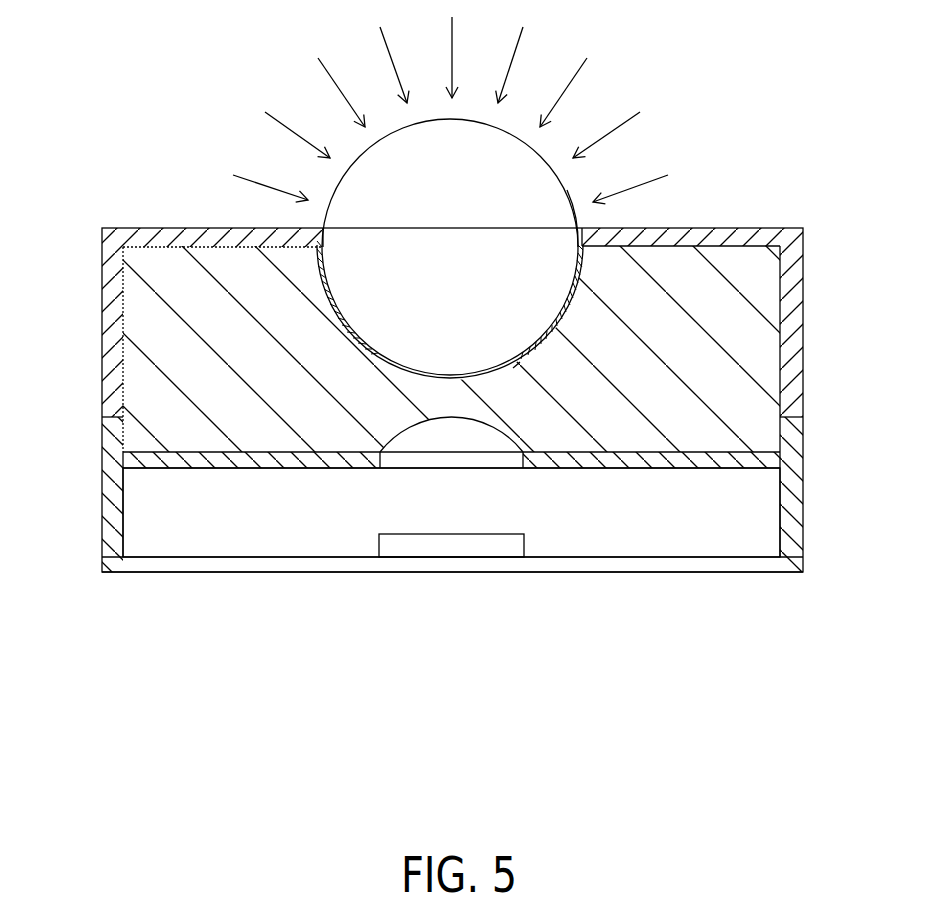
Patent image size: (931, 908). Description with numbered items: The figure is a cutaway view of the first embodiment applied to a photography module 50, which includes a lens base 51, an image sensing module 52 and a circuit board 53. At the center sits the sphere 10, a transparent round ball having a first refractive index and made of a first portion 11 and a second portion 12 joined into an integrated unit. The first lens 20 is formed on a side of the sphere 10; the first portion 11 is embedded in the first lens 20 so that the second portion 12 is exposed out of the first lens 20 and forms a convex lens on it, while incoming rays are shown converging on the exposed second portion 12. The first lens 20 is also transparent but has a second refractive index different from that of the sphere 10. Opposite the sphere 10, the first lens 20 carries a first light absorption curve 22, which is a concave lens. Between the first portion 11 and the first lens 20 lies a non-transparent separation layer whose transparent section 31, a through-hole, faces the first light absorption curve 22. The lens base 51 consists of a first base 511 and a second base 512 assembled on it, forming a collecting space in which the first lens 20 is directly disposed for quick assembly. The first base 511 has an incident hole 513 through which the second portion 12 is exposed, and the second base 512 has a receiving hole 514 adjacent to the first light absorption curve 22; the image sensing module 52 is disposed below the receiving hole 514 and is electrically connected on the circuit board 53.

The sphere 10 is at (350, 208).
The first portion 11 is at (582, 272).
The second portion 12 is at (567, 190).
The first lens 20 is at (763, 282).
The first light absorption curve 22 is at (393, 437).
The transparent section 31 is at (513, 367).
The photography module 50 is at (102, 572).
The lens base 51 is at (137, 227).
The first base 511 is at (112, 265).
The second base 512 is at (112, 498).
The incident hole 513 is at (320, 229).
The receiving hole 514 is at (400, 457).
The image sensing module 52 is at (472, 548).
The circuit board 53 is at (700, 562).